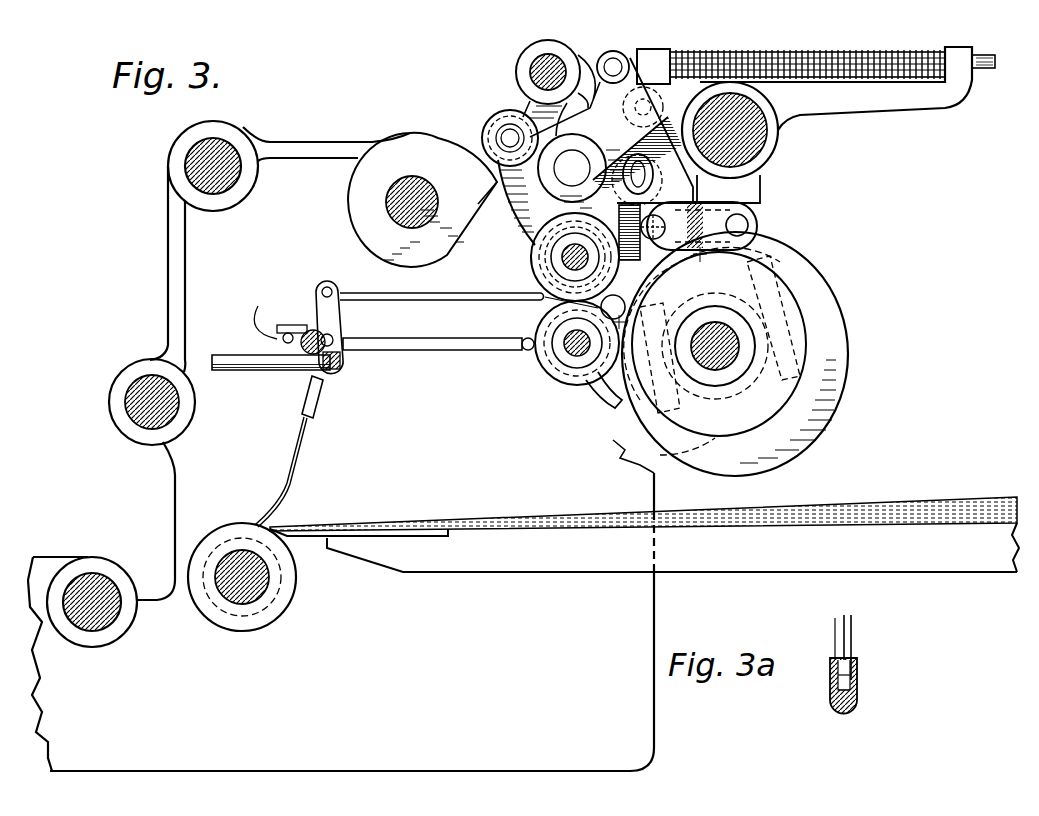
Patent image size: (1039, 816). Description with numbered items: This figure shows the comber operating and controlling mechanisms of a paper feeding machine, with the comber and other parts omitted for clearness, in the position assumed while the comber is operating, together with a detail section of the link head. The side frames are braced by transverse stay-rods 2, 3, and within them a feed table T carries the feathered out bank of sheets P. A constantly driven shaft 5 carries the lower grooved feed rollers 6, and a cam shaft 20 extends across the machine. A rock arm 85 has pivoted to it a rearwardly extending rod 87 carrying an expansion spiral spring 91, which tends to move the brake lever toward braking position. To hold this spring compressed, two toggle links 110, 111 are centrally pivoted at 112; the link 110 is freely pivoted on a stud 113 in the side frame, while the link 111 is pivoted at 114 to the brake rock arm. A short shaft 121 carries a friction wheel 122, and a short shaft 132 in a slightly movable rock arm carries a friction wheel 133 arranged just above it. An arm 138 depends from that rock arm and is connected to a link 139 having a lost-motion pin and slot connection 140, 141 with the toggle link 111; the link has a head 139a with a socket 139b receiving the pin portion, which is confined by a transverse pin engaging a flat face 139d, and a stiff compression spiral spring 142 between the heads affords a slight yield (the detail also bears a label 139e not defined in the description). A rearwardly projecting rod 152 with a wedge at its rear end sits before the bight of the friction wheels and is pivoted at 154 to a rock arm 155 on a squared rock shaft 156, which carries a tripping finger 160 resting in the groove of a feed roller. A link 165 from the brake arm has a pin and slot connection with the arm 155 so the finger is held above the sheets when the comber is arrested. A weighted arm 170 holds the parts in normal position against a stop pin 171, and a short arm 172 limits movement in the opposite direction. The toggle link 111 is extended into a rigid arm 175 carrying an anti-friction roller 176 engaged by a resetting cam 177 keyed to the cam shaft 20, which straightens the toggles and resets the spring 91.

In FIG. 3, the transverse stay-rod 2 is at (775, 128).
In FIG. 3, the transverse stay-rod 3 is at (146, 432).
In FIG. 3, the constantly driven shaft 5 is at (238, 598).
In FIG. 3, the lower grooved feed rollers 6 is at (288, 604).
In FIG. 3, the cam shaft 20 is at (410, 178).
In FIG. 3, the rock arm 85 is at (609, 54).
In FIG. 3, the rod 87 is at (985, 56).
In FIG. 3, the expansion spiral spring 91 is at (800, 52).
In FIG. 3, the toggle link 110 is at (760, 228).
In FIG. 3, the toggle link 111 is at (565, 203).
In FIG. 3, the central pivot 112 is at (684, 236).
In FIG. 3, the stud 113 is at (757, 205).
In FIG. 3, the pivot 114 is at (531, 251).
In FIG. 3, the short shaft 121 is at (574, 362).
In FIG. 3, the friction wheel 122 is at (545, 362).
In FIG. 3, the short shaft 132 is at (566, 268).
In FIG. 3, the friction wheel 133 is at (556, 258).
In FIG. 3, the arm 138 is at (600, 305).
In FIG. 3, the link 139 is at (598, 188).
In FIG. 3A, the link 139 is at (851, 615).
In FIG. 3, the head 139a is at (640, 262).
In FIG. 3A, the head 139a is at (858, 660).
In FIG. 3A, the socket 139b is at (860, 682).
In FIG. 3A, the flat face 139d is at (836, 690).
In FIG. 3A, the holder shoulder 139e is at (836, 672).
In FIG. 3, the pin 140 is at (623, 140).
In FIG. 3, the slot 141 is at (762, 178).
In FIG. 3, the compression spiral spring 142 is at (764, 273).
In FIG. 3, the rod 152 is at (428, 290).
In FIG. 3, the pivot 154 is at (330, 286).
In FIG. 3, the rock arm 155 is at (346, 316).
In FIG. 3, the squared rock shaft 156 is at (343, 364).
In FIG. 3, the tripping finger 160 is at (292, 490).
In FIG. 3, the link 165 is at (470, 352).
In FIG. 3, the weighted arm 170 is at (232, 353).
In FIG. 3, the stop pin 171 is at (262, 300).
In FIG. 3, the short arm 172 is at (298, 321).
In FIG. 3, the extension arm 175 is at (492, 198).
In FIG. 3, the anti-friction roller 176 is at (498, 124).
In FIG. 3, the resetting cam 177 is at (349, 203).
In FIG. 3, the bank of sheets P is at (643, 497).
In FIG. 3, the feed table T is at (840, 556).